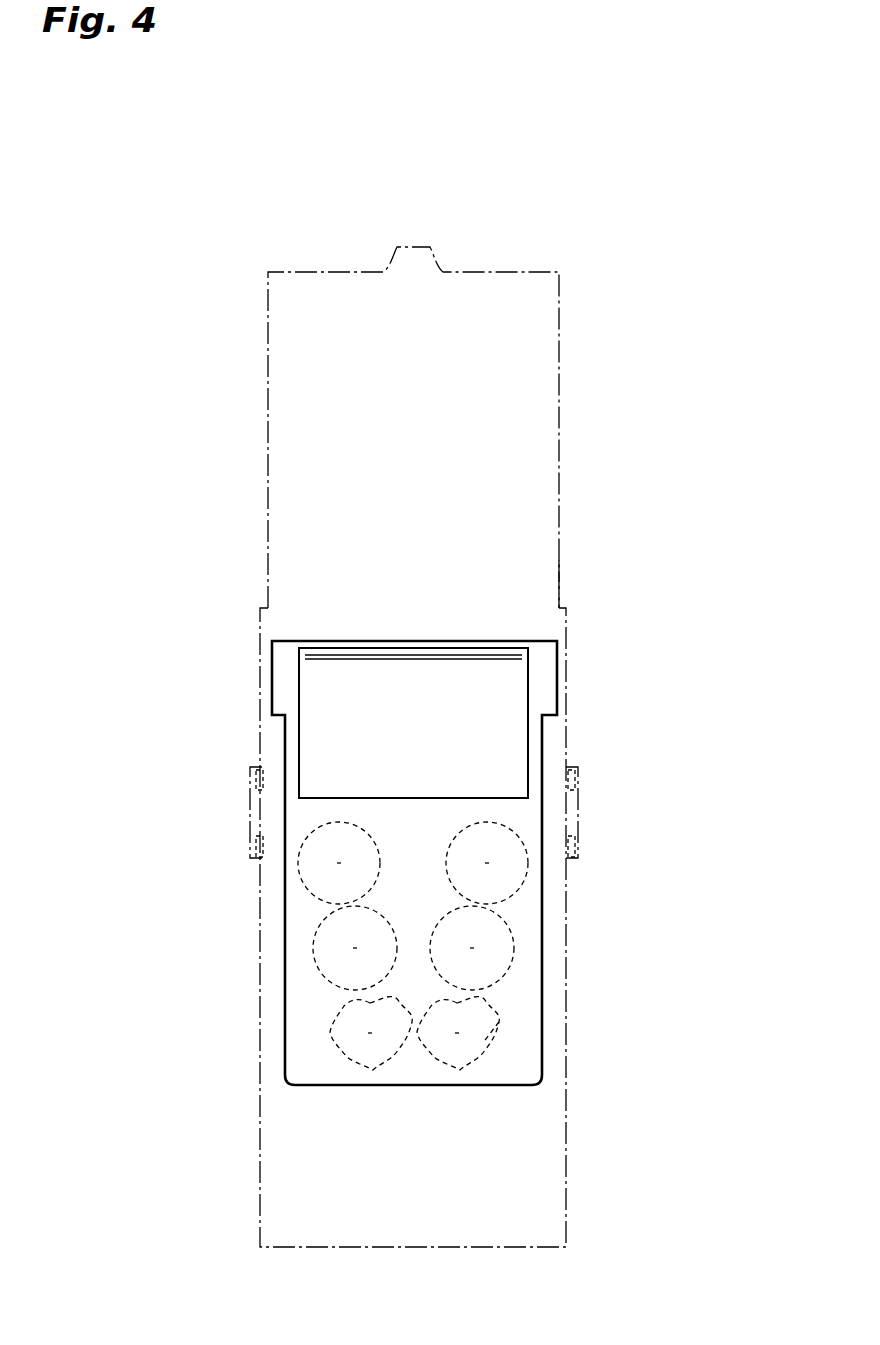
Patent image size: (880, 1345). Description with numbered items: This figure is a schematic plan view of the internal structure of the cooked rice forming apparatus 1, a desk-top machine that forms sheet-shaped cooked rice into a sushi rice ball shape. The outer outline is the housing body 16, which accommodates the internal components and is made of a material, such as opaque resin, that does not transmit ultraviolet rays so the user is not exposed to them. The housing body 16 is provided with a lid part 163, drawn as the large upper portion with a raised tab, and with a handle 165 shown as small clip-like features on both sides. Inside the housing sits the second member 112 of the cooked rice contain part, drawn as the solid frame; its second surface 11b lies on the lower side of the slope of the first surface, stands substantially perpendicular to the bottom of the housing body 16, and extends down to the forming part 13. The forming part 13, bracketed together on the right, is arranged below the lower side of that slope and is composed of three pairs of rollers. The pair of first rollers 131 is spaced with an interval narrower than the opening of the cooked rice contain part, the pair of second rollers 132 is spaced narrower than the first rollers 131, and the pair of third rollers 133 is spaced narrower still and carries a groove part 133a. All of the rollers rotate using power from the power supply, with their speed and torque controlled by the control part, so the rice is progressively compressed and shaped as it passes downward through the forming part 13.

The cooked rice forming apparatus 1 is at (418, 208).
The lid part 163 is at (275, 487).
The housing body 16 is at (566, 658).
The handle 165 is at (570, 808).
The second member 112 is at (272, 690).
The second surface 11b is at (300, 810).
The forming part 13 is at (515, 988).
The first roller 131 is at (372, 866).
The second roller 132 is at (387, 950).
The third roller 133 is at (383, 1050).
The groove part 133a is at (567, 1043).